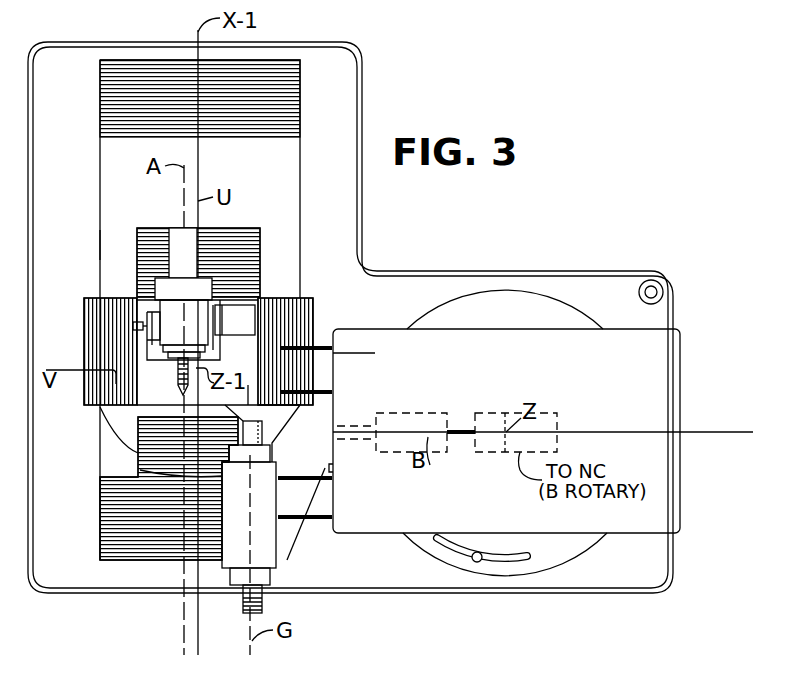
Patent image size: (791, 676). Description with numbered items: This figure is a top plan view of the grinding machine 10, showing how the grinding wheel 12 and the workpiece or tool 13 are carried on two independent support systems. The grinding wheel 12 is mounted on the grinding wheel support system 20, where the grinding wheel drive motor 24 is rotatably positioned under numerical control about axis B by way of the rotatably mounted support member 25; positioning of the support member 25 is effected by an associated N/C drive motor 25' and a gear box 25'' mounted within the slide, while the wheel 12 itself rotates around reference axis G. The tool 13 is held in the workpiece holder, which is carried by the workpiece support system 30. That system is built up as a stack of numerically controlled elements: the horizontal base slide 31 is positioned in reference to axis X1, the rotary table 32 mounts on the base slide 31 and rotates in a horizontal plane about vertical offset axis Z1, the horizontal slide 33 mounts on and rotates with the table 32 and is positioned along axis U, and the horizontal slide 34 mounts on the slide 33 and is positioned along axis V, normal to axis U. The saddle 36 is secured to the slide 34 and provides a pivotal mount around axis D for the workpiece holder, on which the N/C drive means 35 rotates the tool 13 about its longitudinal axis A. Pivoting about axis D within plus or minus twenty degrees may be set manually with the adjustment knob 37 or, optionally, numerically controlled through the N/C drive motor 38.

The machine 10 is at (387, 260).
The grinding wheel 12 is at (258, 413).
The workpiece or tool 13 is at (178, 382).
The grinding wheel support system 20 is at (552, 290).
The grinding wheel drive motor 24 is at (270, 580).
The rotatably mounted support member 25 is at (543, 407).
The N/C drive motor 25' is at (516, 416).
The gear box 25'' is at (414, 405).
The workpiece support system 30 is at (303, 262).
The N/C horizontal base slide 31 is at (100, 248).
The N/C rotary table 32 is at (138, 432).
The N/C horizontal slide 33 is at (140, 414).
The N/C horizontal slide 34 is at (252, 296).
The N/C drive means 35 is at (178, 240).
The saddle 36 is at (220, 350).
The manual adjustment knob 37 is at (132, 326).
The N/C drive motor 38 is at (250, 322).